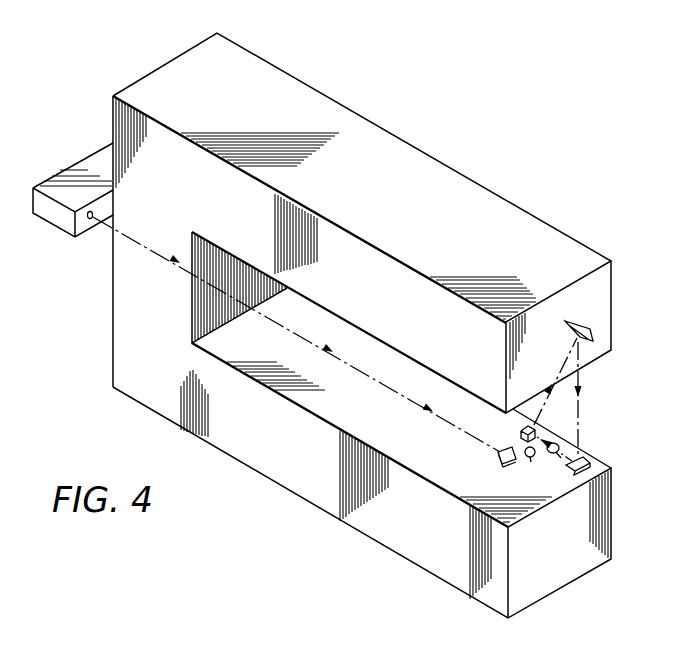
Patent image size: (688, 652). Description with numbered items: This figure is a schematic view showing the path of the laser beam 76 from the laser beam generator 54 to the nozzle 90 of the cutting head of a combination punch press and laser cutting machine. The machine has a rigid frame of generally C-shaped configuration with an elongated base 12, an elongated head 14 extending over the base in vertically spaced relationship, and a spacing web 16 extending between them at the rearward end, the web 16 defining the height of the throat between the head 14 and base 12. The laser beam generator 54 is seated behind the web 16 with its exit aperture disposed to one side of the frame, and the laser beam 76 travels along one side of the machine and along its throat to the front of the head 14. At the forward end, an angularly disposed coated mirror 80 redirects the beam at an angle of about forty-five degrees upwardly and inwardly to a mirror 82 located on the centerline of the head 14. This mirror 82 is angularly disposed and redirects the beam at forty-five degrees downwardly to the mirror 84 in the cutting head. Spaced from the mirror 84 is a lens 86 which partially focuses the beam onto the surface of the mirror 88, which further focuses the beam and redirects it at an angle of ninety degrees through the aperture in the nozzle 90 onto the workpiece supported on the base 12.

The elongated base 12 is at (312, 477).
The elongated head 14 is at (429, 185).
The spacing web 16 is at (123, 313).
The laser beam generator 54 is at (82, 158).
The laser beam 76 is at (193, 340).
The coated mirror 80 is at (498, 455).
The mirror 82 is at (592, 330).
The mirror 84 is at (585, 461).
The lens 86 is at (553, 455).
The mirror 88 is at (534, 428).
The nozzle 90 is at (525, 458).